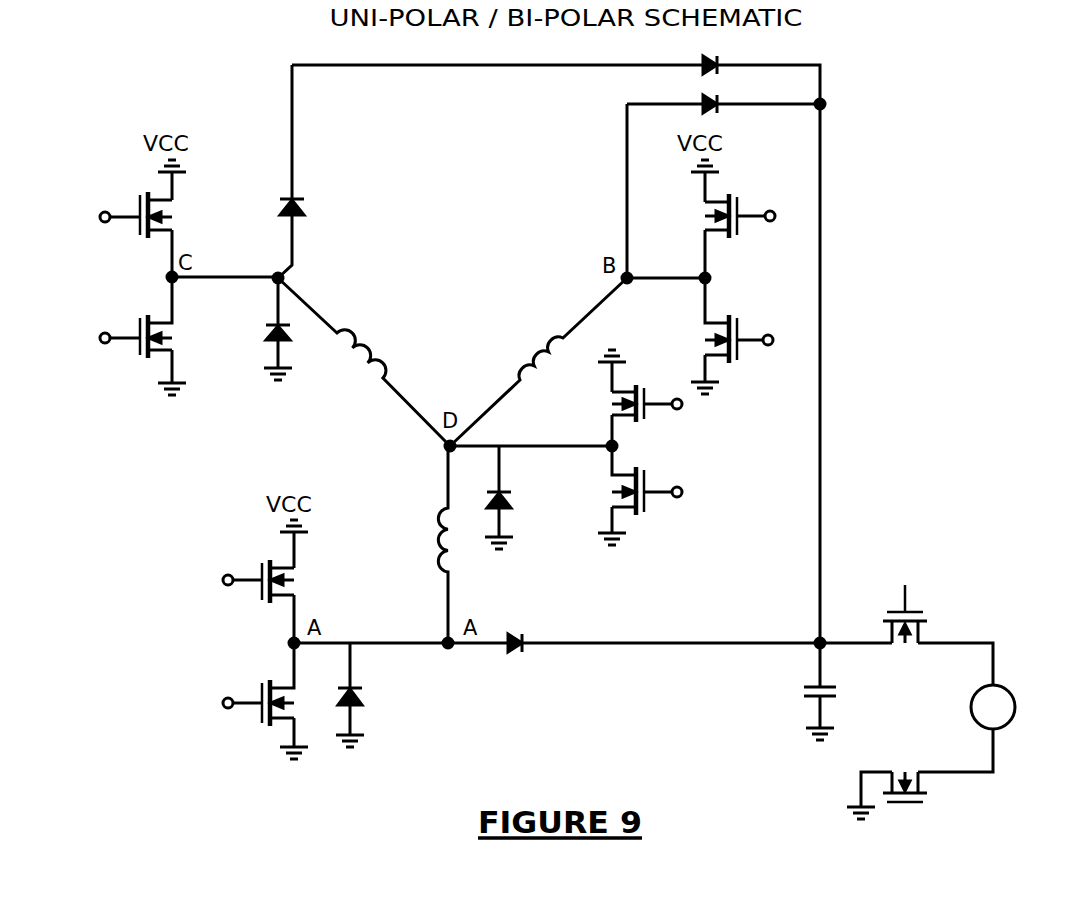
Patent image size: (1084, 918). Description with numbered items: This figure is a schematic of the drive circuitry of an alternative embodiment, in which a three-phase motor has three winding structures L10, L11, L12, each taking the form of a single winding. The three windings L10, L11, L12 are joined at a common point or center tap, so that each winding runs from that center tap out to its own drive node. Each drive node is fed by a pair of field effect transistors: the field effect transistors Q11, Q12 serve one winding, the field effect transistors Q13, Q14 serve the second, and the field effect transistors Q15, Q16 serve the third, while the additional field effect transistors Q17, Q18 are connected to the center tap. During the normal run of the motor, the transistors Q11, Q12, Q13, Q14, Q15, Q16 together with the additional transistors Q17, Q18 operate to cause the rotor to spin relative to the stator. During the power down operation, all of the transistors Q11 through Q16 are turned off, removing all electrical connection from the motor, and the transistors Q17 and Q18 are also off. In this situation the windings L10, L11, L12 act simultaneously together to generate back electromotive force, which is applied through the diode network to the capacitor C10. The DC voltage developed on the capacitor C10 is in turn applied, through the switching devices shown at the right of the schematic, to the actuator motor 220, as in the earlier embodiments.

The field effect transistor Q11 is at (127, 229).
The field effect transistor Q12 is at (134, 336).
The field effect transistor Q13 is at (748, 236).
The field effect transistor Q14 is at (740, 336).
The field effect transistor Q15 is at (248, 594).
The field effect transistor Q16 is at (255, 701).
The additional field effect transistor Q17 is at (653, 415).
The additional field effect transistor Q18 is at (646, 495).
The winding structure L10 is at (364, 362).
The winding structure L11 is at (538, 362).
The winding structure L12 is at (417, 544).
The capacitor C10 is at (844, 691).
The actuator motor 220 is at (1011, 726).